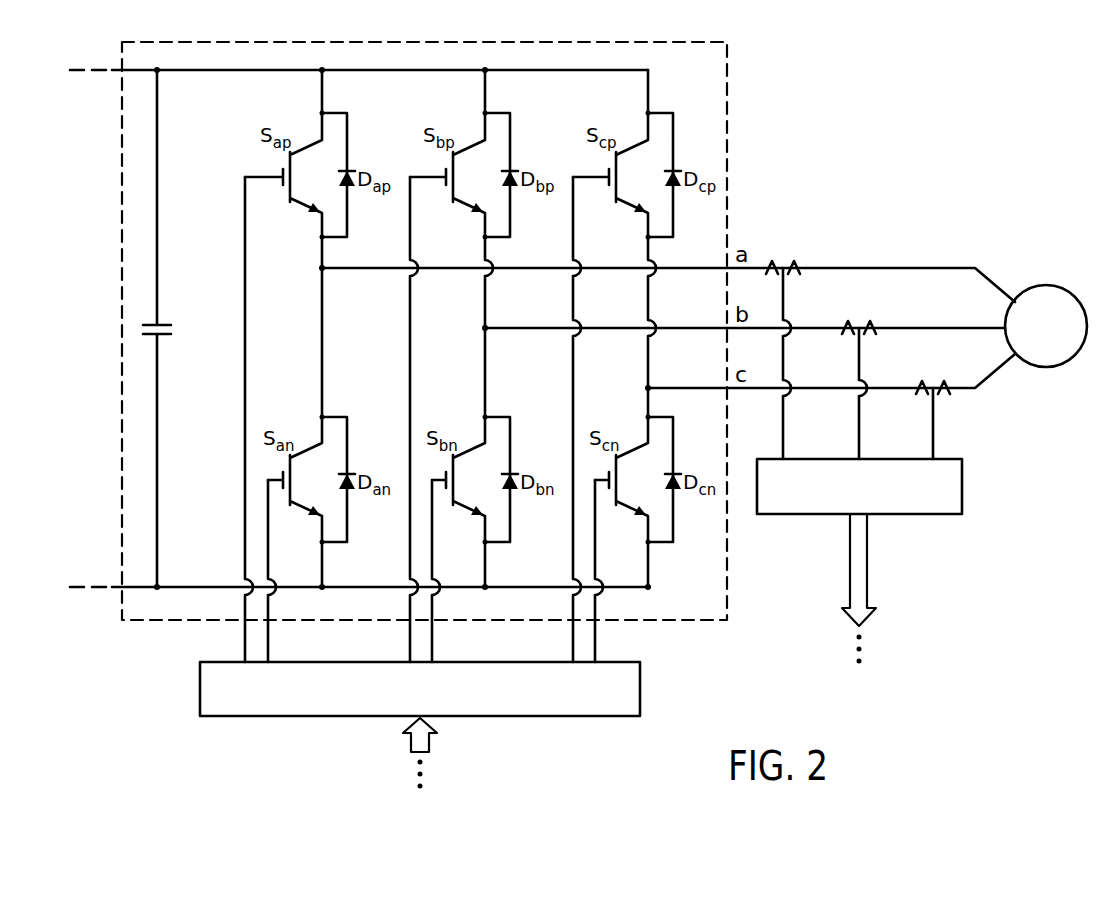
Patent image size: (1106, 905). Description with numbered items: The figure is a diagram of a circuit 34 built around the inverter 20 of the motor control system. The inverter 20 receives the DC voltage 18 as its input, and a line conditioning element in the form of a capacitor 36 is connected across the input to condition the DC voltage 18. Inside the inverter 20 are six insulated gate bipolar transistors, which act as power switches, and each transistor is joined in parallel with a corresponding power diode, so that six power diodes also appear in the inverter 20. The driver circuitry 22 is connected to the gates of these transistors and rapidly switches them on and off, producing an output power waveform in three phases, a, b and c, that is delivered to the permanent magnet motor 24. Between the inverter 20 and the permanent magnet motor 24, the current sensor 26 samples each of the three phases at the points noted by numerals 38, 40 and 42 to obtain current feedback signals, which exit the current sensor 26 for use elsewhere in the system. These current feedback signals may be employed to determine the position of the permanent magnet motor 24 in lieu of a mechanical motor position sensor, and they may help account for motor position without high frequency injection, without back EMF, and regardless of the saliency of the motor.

The DC voltage 18 is at (138, 72).
The inverter 20 is at (741, 126).
The driver circuitry 22 is at (641, 688).
The permanent magnet motor 24 is at (1045, 286).
The current sensor 26 is at (963, 487).
The circuit 34 is at (936, 645).
The capacitor 36 is at (160, 323).
The phase a current sampling point 38 is at (792, 265).
The phase b current sampling point 40 is at (870, 325).
The phase c current sampling point 42 is at (944, 385).